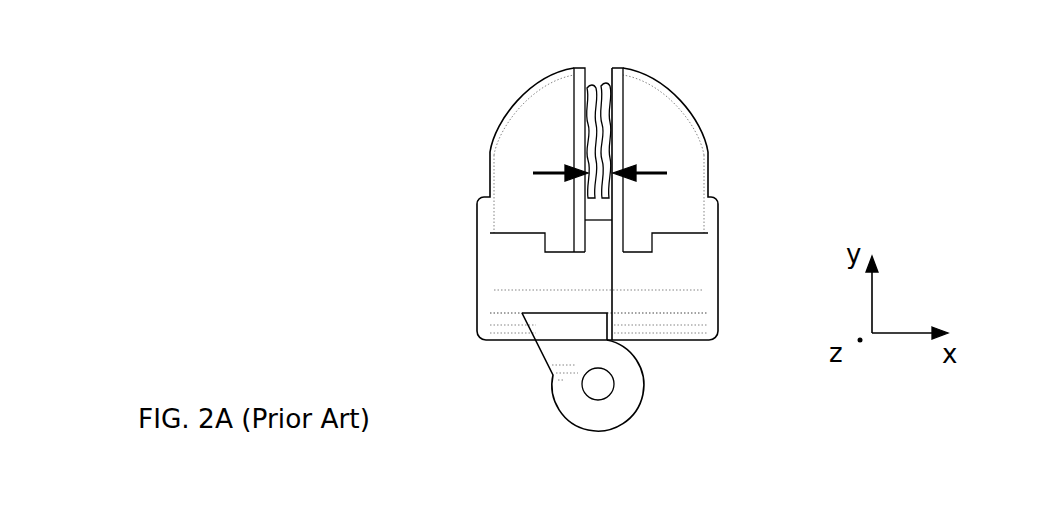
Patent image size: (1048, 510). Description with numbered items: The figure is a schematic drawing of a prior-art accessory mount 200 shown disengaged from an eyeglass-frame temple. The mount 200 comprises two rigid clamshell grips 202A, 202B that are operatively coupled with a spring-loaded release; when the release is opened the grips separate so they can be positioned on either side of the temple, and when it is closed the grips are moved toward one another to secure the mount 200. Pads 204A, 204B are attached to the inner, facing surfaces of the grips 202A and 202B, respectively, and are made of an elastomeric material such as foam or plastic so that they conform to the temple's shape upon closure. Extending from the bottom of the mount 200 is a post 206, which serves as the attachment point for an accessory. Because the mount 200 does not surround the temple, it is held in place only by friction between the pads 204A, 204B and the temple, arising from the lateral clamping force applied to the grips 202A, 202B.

The mount 200 is at (360, 49).
The grip 202A is at (510, 150).
The grip 202B is at (650, 118).
The pad 204A is at (588, 117).
The pad 204B is at (607, 93).
The post 206 is at (630, 373).